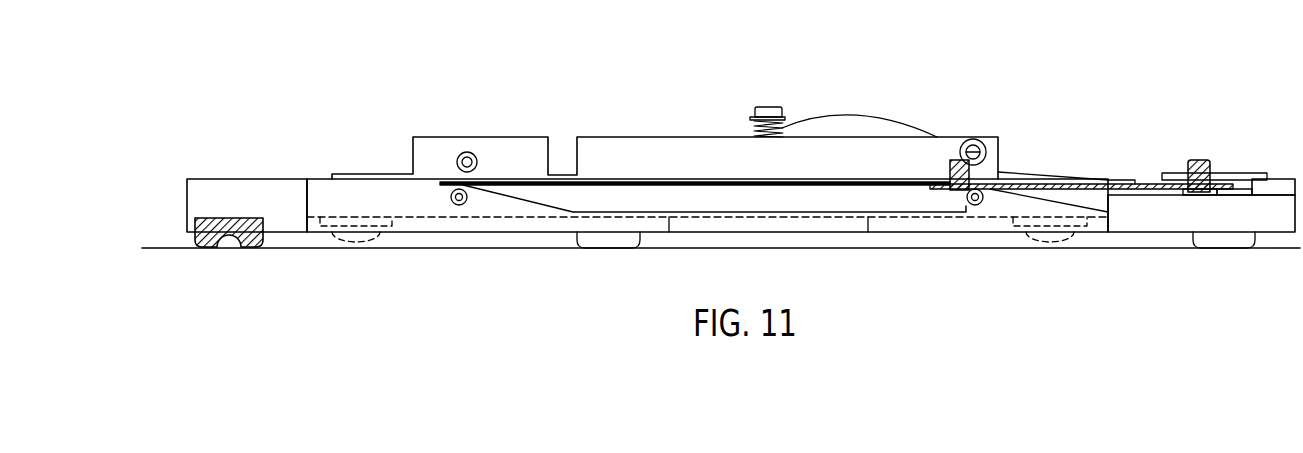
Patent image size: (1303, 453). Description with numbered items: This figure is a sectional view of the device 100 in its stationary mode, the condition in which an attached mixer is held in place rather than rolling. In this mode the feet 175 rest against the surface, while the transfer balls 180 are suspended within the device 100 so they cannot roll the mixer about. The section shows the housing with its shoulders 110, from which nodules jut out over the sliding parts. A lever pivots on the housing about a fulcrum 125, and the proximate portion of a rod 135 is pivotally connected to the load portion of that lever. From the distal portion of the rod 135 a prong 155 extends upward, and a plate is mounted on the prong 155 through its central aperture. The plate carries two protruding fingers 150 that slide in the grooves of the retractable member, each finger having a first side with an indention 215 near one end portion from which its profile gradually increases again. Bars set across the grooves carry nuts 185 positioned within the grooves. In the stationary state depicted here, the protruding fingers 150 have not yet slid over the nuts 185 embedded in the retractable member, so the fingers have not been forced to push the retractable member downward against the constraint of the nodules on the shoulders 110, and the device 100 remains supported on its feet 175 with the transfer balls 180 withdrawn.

The device 100 is at (1098, 117).
The shoulders 110 is at (676, 138).
The fulcrum 125 is at (1215, 160).
The rod 135 is at (1086, 184).
The protruding fingers 150 is at (547, 195).
The prong 155 is at (953, 170).
The feet 175 is at (229, 249).
The transfer balls 180 is at (356, 243).
The nut 185 is at (462, 206).
The indention 215 is at (1030, 199).